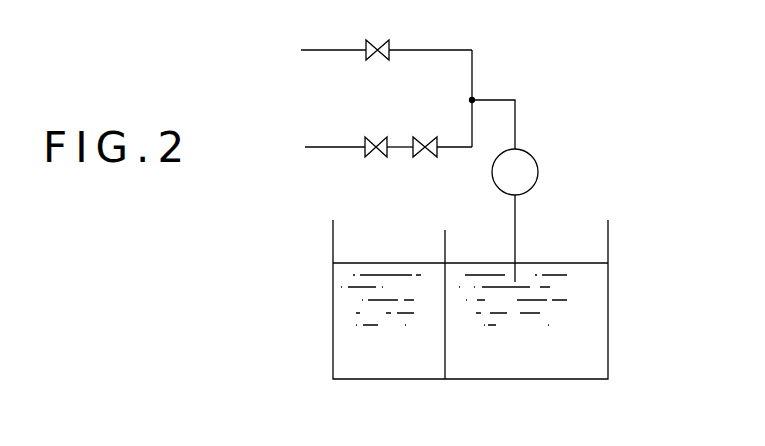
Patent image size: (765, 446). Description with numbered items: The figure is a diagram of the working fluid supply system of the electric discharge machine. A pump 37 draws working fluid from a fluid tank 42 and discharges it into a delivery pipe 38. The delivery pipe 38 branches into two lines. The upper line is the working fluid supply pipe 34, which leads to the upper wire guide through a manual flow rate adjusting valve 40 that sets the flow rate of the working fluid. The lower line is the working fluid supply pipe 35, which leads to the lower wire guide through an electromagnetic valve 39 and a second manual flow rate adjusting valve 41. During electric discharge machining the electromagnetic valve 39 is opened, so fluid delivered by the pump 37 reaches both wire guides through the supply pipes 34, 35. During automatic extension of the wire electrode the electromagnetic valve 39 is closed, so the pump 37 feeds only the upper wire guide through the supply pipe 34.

The working fluid supply pipe 34 is at (325, 50).
The working fluid supply pipe 35 is at (333, 147).
The pump 37 is at (538, 170).
The delivery pipe 38 is at (515, 115).
The electromagnetic valve 39 is at (430, 156).
The manual flow rate adjusting valve 40 is at (383, 42).
The manual flow rate adjusting valve 41 is at (382, 137).
The fluid tank 42 is at (608, 344).